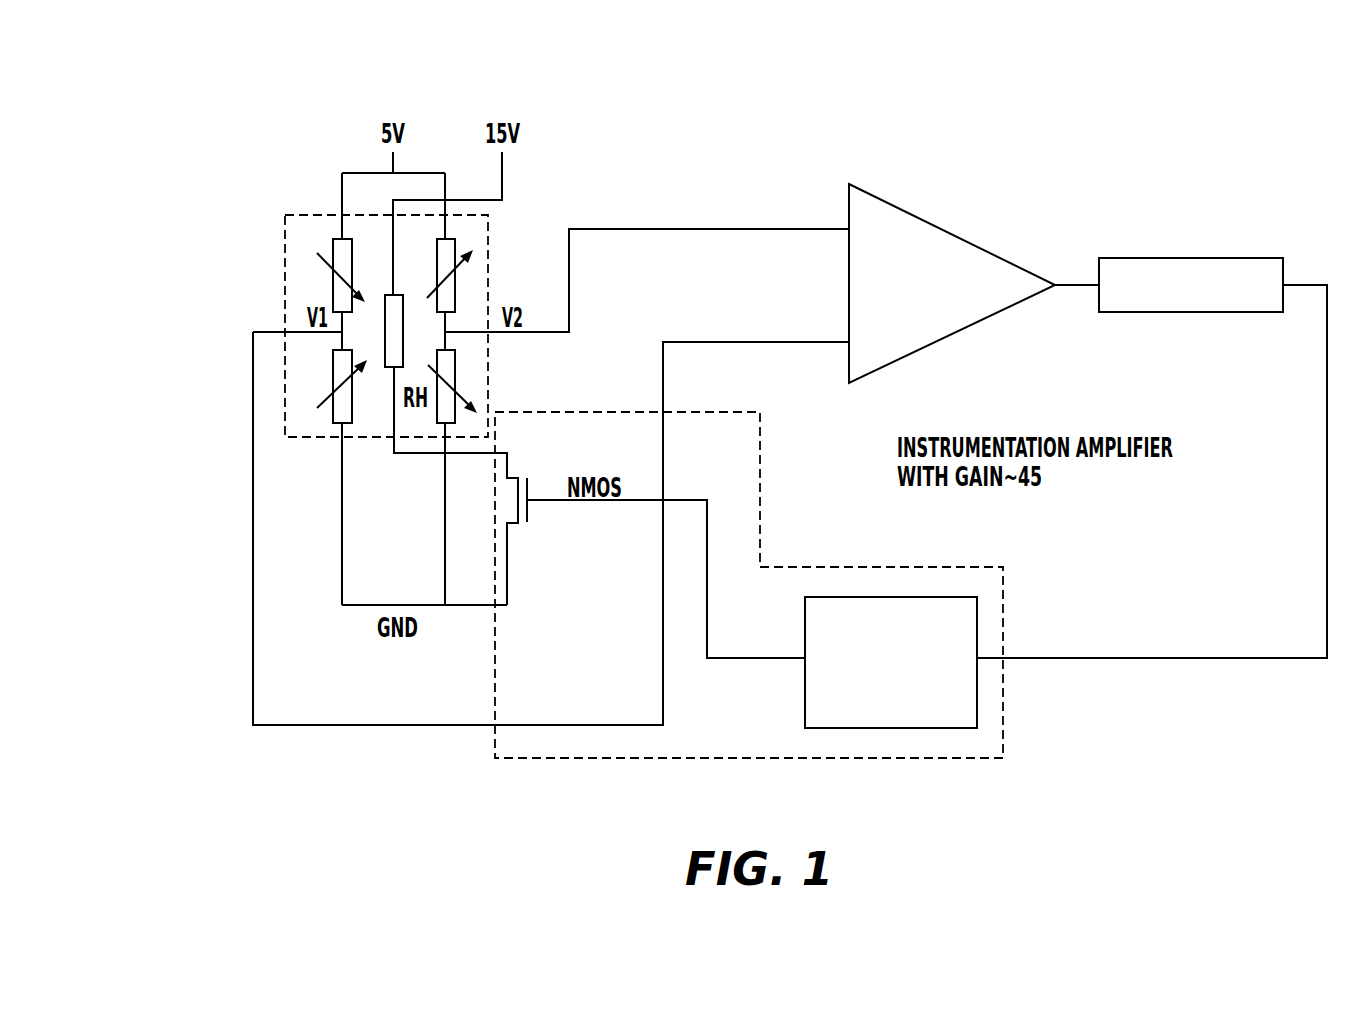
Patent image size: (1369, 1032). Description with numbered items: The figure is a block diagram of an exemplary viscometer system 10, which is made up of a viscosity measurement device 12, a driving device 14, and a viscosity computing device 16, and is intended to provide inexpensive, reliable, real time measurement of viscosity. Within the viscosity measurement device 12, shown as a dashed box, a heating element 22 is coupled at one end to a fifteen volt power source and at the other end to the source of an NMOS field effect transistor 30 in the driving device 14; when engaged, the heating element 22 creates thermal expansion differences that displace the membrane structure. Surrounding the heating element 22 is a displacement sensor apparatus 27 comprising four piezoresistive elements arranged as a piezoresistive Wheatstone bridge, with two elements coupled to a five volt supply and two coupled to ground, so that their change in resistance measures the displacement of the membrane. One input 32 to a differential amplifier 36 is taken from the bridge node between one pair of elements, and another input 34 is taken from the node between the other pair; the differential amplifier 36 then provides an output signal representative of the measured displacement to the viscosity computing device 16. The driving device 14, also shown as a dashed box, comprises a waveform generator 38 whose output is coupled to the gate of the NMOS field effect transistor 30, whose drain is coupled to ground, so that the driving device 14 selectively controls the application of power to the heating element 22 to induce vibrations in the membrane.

The viscometer system 10 is at (1225, 705).
The viscosity measurement device 12 is at (285, 242).
The driving device 14 is at (1003, 712).
The viscosity computing device 16 is at (1205, 299).
The heating element 22 is at (385, 338).
The displacement sensor apparatus 27 is at (253, 310).
The NMOS field effect transistor 30 is at (541, 529).
The input to differential amplifier 32 is at (742, 338).
The input to differential amplifier 34 is at (742, 225).
The differential amplifier 36 is at (932, 228).
The waveform generator 38 is at (902, 711).